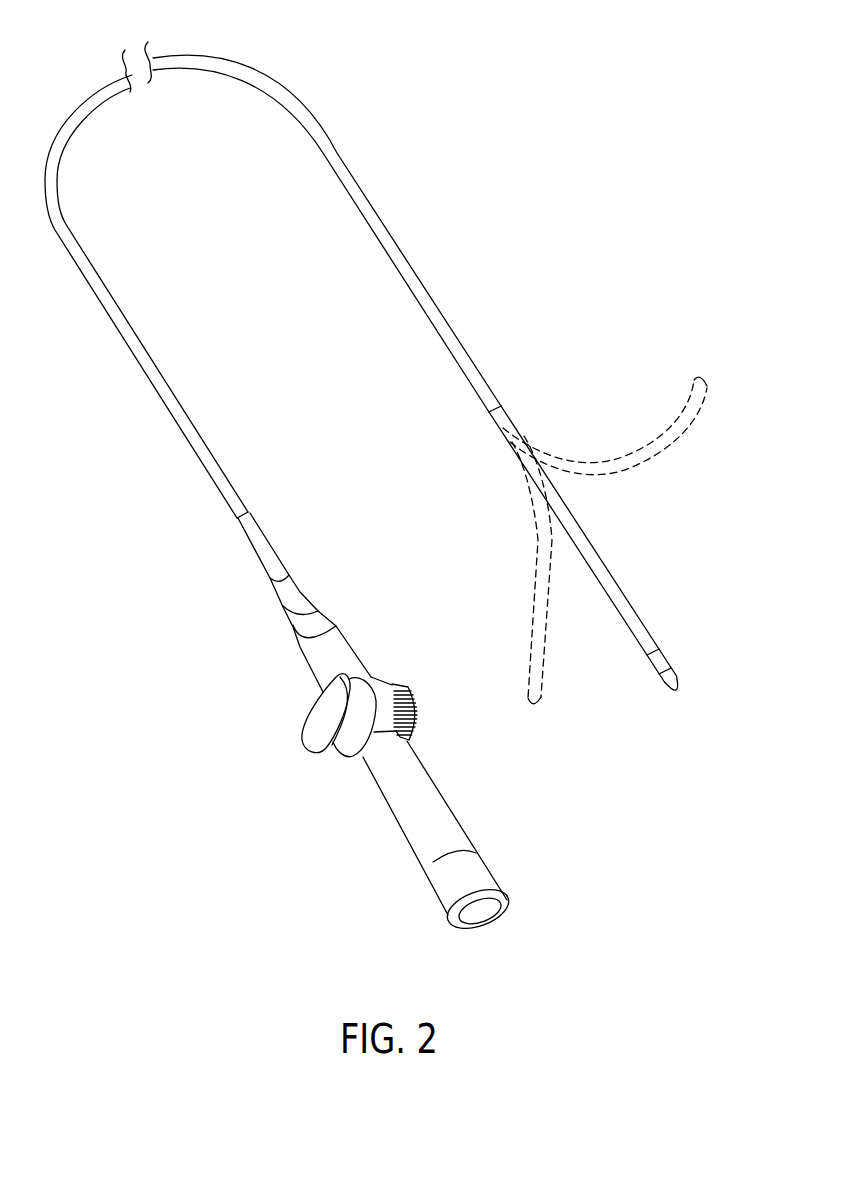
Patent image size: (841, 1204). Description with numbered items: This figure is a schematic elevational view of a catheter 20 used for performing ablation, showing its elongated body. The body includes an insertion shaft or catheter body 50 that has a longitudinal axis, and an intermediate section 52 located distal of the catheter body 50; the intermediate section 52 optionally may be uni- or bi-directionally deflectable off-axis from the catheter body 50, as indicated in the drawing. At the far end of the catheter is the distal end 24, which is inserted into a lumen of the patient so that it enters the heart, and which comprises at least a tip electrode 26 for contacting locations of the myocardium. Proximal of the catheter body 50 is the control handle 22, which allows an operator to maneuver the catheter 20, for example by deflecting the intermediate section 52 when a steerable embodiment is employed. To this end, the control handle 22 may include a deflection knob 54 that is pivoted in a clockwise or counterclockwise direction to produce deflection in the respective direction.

The catheter 20 is at (382, 38).
The catheter body 50 is at (62, 145).
The intermediate section 52 is at (580, 523).
The tip electrode 26 is at (663, 680).
The distal end 24 is at (697, 625).
The control handle 22 is at (400, 818).
The deflection knob 54 is at (303, 739).